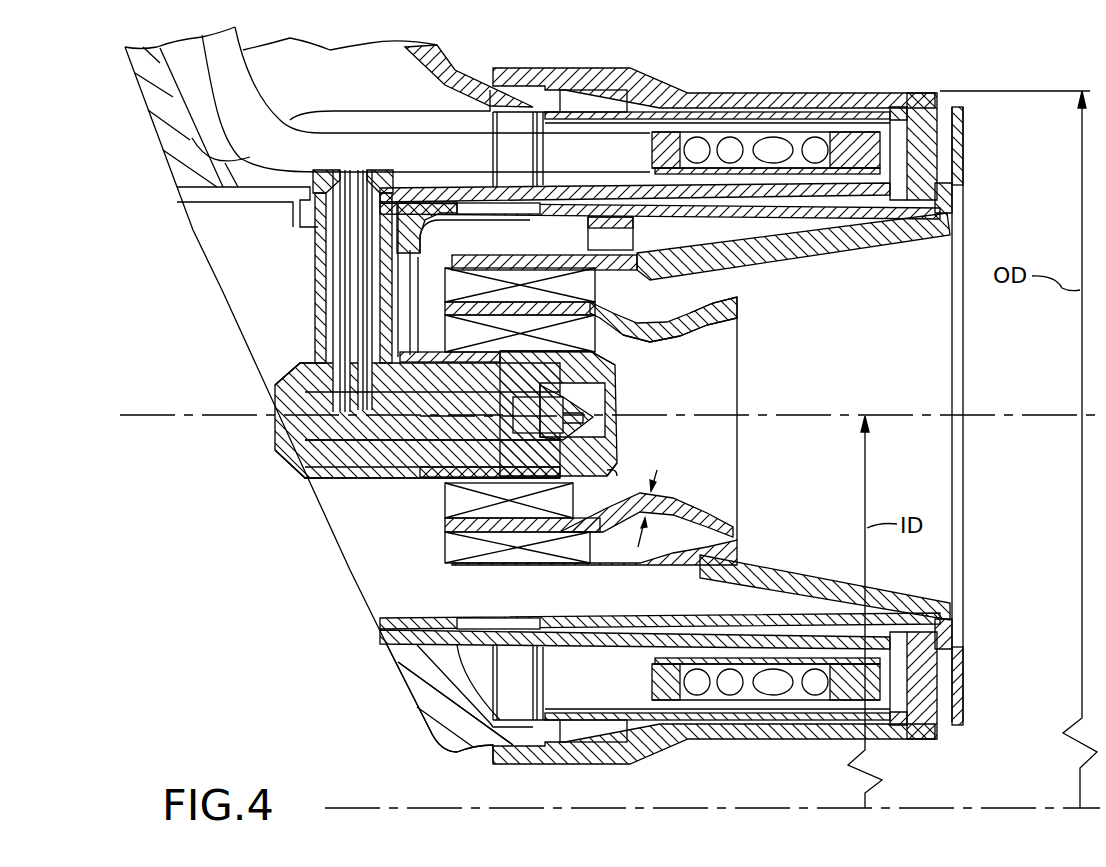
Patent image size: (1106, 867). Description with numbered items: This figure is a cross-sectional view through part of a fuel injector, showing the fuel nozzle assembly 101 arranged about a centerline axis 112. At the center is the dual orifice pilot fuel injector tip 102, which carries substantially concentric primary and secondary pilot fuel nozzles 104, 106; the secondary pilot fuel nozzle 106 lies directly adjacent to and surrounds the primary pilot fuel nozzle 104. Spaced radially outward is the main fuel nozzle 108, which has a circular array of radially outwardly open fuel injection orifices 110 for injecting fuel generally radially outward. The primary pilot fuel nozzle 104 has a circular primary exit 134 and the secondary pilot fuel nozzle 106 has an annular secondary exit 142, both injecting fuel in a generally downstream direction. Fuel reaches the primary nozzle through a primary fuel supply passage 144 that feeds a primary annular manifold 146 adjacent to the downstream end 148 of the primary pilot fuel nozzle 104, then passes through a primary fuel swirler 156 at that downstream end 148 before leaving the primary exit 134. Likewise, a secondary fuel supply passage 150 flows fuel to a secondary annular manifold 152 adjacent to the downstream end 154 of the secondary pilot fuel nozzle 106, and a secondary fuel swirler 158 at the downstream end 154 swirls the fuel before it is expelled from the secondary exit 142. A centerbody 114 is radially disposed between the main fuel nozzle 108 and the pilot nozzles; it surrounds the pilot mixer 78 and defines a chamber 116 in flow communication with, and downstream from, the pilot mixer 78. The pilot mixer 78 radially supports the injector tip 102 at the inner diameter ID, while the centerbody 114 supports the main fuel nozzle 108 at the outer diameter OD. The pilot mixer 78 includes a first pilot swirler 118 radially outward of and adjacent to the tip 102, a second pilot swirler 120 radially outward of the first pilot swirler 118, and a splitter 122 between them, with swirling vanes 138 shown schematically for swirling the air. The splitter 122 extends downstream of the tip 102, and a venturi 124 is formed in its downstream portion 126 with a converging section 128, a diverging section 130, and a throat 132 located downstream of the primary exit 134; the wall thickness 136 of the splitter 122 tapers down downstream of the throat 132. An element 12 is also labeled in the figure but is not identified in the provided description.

The gas turbine engine 12 is at (957, 810).
The pilot mixer 78 is at (470, 600).
The fuel nozzle assembly 101 is at (243, 497).
The dual orifice pilot fuel injector tip 102 is at (282, 460).
The primary pilot fuel nozzle 104 is at (595, 420).
The secondary pilot fuel nozzle 106 is at (617, 478).
The main fuel nozzle 108 is at (778, 100).
The fuel injection orifices 110 is at (768, 118).
The centerline axis 112 is at (800, 417).
The centerbody 114 is at (780, 572).
The chamber 116 is at (923, 477).
The first pilot swirler 118 is at (465, 507).
The second pilot swirler 120 is at (463, 547).
The splitter 122 is at (650, 520).
The venturi 124 is at (700, 343).
The downstream portion 126 is at (625, 340).
The converging section 128 is at (620, 336).
The diverging section 130 is at (705, 310).
The throat 132 is at (700, 548).
The primary exit 134 is at (607, 403).
The wall thickness 136 is at (645, 492).
The swirling vanes 138 is at (500, 500).
The secondary exit 142 is at (617, 477).
The primary fuel supply passage 144 is at (355, 417).
The primary annular manifold 146 is at (580, 350).
The downstream end 148 is at (570, 387).
The secondary fuel supply passage 150 is at (377, 447).
The secondary annular manifold 152 is at (517, 373).
The downstream end 154 is at (540, 380).
The primary fuel swirler 156 is at (450, 482).
The secondary fuel swirler 158 is at (445, 325).